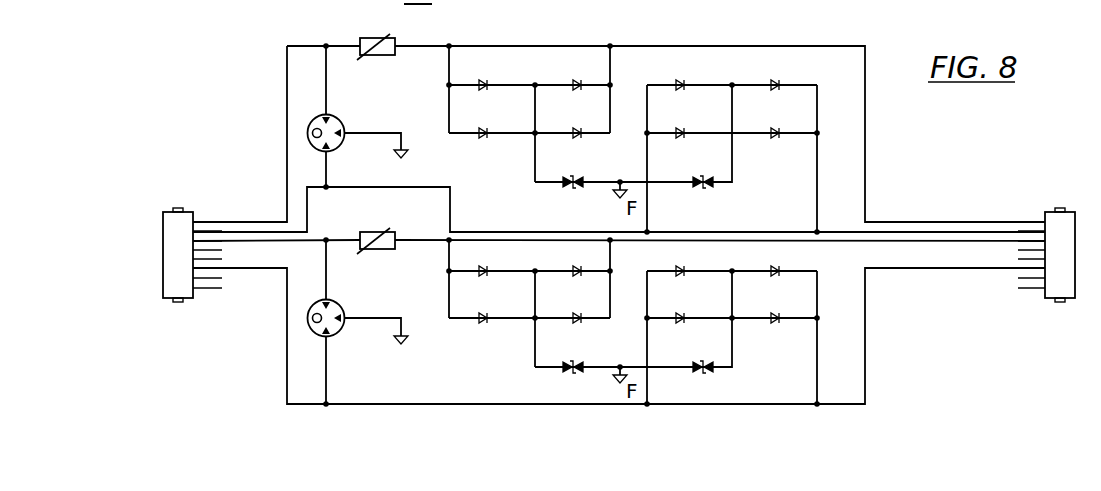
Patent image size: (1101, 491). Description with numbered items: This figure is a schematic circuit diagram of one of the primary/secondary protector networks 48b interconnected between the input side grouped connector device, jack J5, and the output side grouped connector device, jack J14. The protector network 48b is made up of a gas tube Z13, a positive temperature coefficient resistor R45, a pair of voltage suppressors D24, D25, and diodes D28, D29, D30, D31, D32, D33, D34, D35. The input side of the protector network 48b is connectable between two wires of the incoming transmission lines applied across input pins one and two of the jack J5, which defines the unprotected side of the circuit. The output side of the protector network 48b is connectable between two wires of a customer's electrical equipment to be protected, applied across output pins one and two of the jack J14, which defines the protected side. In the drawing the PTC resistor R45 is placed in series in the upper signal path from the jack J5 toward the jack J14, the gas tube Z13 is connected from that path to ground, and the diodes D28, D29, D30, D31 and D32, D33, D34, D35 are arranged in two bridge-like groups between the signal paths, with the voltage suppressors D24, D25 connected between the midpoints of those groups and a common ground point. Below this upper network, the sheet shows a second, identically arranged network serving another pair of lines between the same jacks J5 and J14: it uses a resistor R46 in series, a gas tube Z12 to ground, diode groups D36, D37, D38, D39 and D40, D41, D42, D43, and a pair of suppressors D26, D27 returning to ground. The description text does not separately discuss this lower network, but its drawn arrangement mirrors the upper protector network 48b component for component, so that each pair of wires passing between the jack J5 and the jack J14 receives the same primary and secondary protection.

The primary/secondary protector network 48b is at (226, 127).
The positive temperature coefficient (PTC) resistor R45 is at (377, 35).
The fusible resistor R46 is at (377, 230).
The gas tube Z13 is at (358, 128).
The gas discharge tube Z12 is at (358, 316).
The voltage suppressor D24 is at (571, 169).
The voltage suppressor D25 is at (704, 169).
The transient voltage suppressor diode D26 is at (571, 355).
The transient voltage suppressor diode D27 is at (704, 355).
The diode D28 is at (482, 74).
The diode D29 is at (573, 74).
The diode D30 is at (482, 122).
The diode D31 is at (573, 122).
The diode D32 is at (680, 74).
The diode D33 is at (775, 74).
The diode D34 is at (680, 122).
The diode D35 is at (775, 122).
The steering diode D36 is at (482, 260).
The steering diode D37 is at (573, 260).
The steering diode D38 is at (482, 308).
The steering diode D39 is at (573, 308).
The steering diode D40 is at (680, 260).
The steering diode D41 is at (775, 260).
The steering diode D42 is at (680, 308).
The steering diode D43 is at (775, 308).
The RJ-45 jack J5 is at (214, 299).
The RJ-45 jack J14 is at (1053, 269).